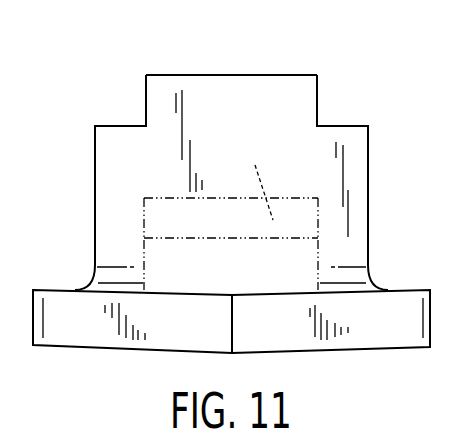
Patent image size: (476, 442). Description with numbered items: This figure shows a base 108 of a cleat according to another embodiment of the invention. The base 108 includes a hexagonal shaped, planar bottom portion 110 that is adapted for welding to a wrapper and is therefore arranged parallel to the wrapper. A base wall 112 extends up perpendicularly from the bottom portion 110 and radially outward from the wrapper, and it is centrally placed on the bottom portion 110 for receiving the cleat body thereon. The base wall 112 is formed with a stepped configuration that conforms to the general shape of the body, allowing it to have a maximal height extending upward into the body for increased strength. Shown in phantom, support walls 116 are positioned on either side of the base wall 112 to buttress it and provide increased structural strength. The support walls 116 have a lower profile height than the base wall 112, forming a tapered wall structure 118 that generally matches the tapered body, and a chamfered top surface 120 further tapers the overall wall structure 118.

The base 108 is at (347, 40).
The bottom portion 110 is at (405, 349).
The base wall 112 is at (370, 197).
The support walls 116 is at (134, 216).
The tapered wall structure 118 is at (95, 100).
The chamfered top surface 120 is at (263, 197).